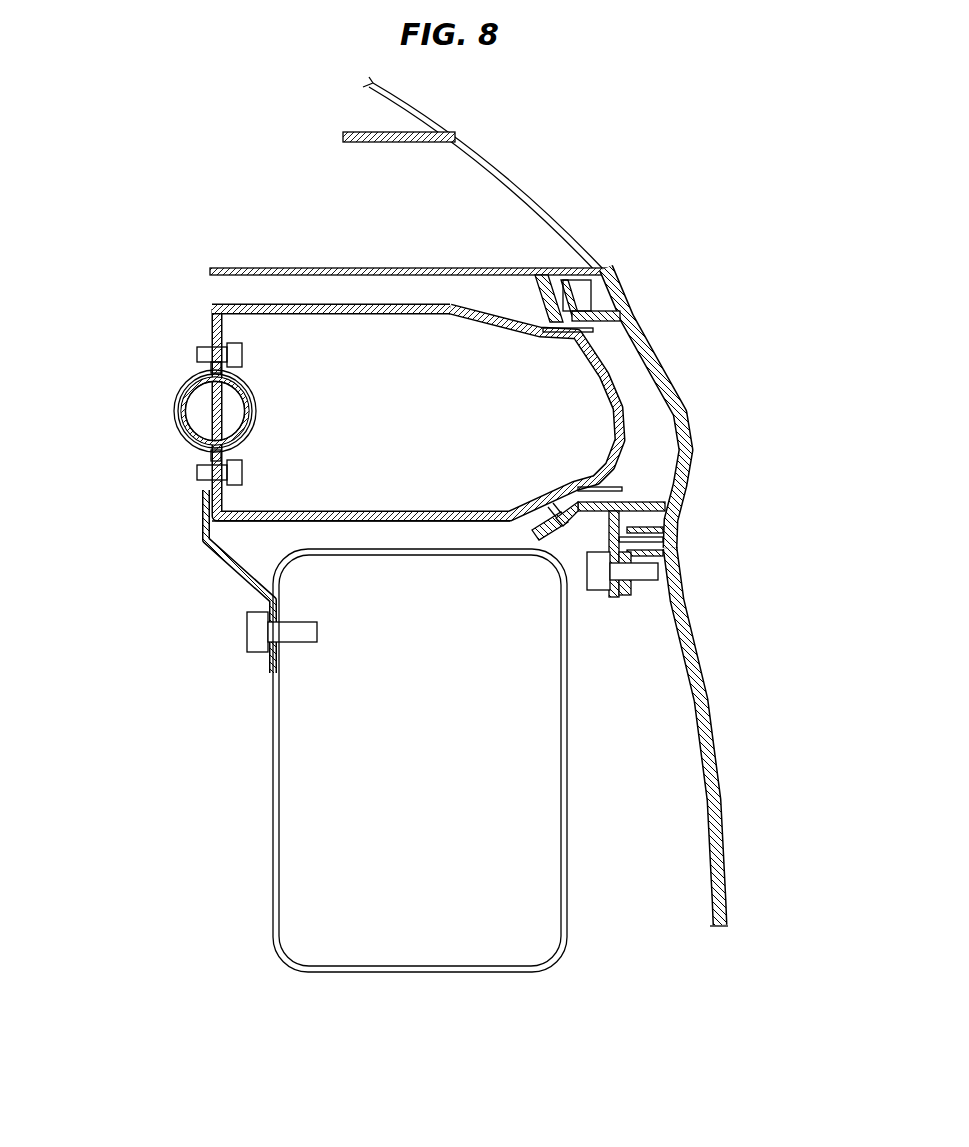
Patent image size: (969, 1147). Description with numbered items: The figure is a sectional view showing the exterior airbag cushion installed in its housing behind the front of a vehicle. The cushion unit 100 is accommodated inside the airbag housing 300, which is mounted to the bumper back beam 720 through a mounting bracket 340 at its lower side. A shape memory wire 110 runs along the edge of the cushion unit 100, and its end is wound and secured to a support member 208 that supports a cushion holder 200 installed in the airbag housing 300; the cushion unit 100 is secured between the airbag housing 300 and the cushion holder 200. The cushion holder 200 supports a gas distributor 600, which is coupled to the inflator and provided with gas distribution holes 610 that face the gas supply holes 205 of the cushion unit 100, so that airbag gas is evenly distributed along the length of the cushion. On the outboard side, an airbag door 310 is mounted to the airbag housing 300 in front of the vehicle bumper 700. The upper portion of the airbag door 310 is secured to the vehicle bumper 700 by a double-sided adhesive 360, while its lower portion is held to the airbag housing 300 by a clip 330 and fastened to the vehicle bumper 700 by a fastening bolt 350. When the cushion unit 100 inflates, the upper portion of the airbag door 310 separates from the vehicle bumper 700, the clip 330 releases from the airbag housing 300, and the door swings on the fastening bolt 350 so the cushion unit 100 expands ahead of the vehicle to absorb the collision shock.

The cushion unit 100 is at (620, 413).
The shape memory wire 110 is at (203, 482).
The cushion holder 200 is at (247, 410).
The gas supply holes 205 is at (247, 418).
The support member 208 is at (202, 473).
The airbag housing 300 is at (400, 303).
The airbag door 310 is at (652, 362).
The clip 330 is at (563, 527).
The mounting bracket 340 is at (223, 568).
The fastening bolt 350 is at (647, 575).
The double-sided adhesive 360 is at (563, 308).
The gas distributor 600 is at (173, 408).
The gas distribution holes 610 is at (247, 410).
The vehicle bumper 700 is at (705, 710).
The bumper back beam 720 is at (273, 833).